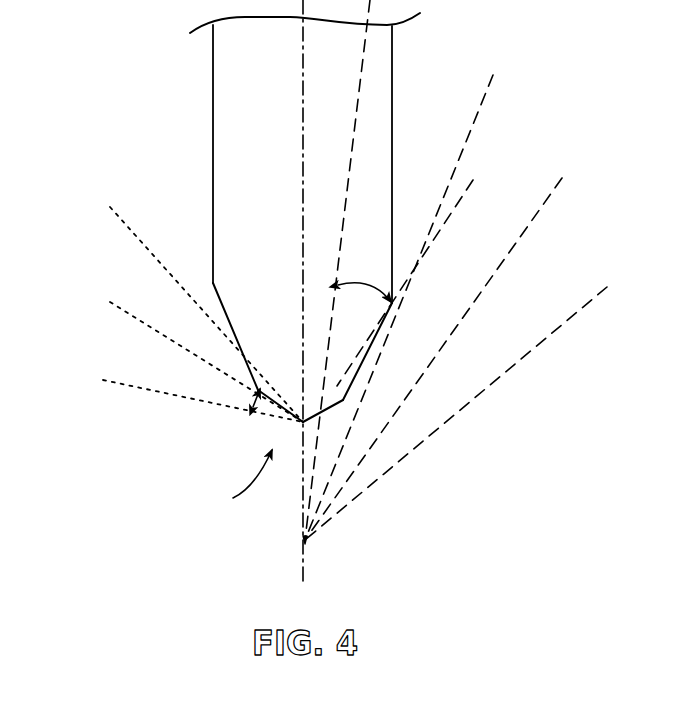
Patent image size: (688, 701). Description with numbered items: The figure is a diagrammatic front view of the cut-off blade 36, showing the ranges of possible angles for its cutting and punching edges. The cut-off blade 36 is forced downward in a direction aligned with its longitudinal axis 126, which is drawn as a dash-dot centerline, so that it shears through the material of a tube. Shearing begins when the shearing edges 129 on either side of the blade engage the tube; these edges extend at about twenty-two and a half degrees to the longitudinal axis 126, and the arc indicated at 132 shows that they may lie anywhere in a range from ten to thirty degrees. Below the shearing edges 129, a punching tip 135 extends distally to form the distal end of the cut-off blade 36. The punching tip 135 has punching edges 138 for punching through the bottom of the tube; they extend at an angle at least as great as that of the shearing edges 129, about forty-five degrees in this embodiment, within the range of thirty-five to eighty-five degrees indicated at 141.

The cut-off blade 36 is at (230, 153).
The shearing edges 129 is at (221, 299).
The range of shearing edge angles 132 is at (374, 290).
The range of punching edge angles 141 is at (255, 398).
The punching edges 138 is at (275, 413).
The punching tip 135 is at (227, 483).
The longitudinal axis 126 is at (305, 553).